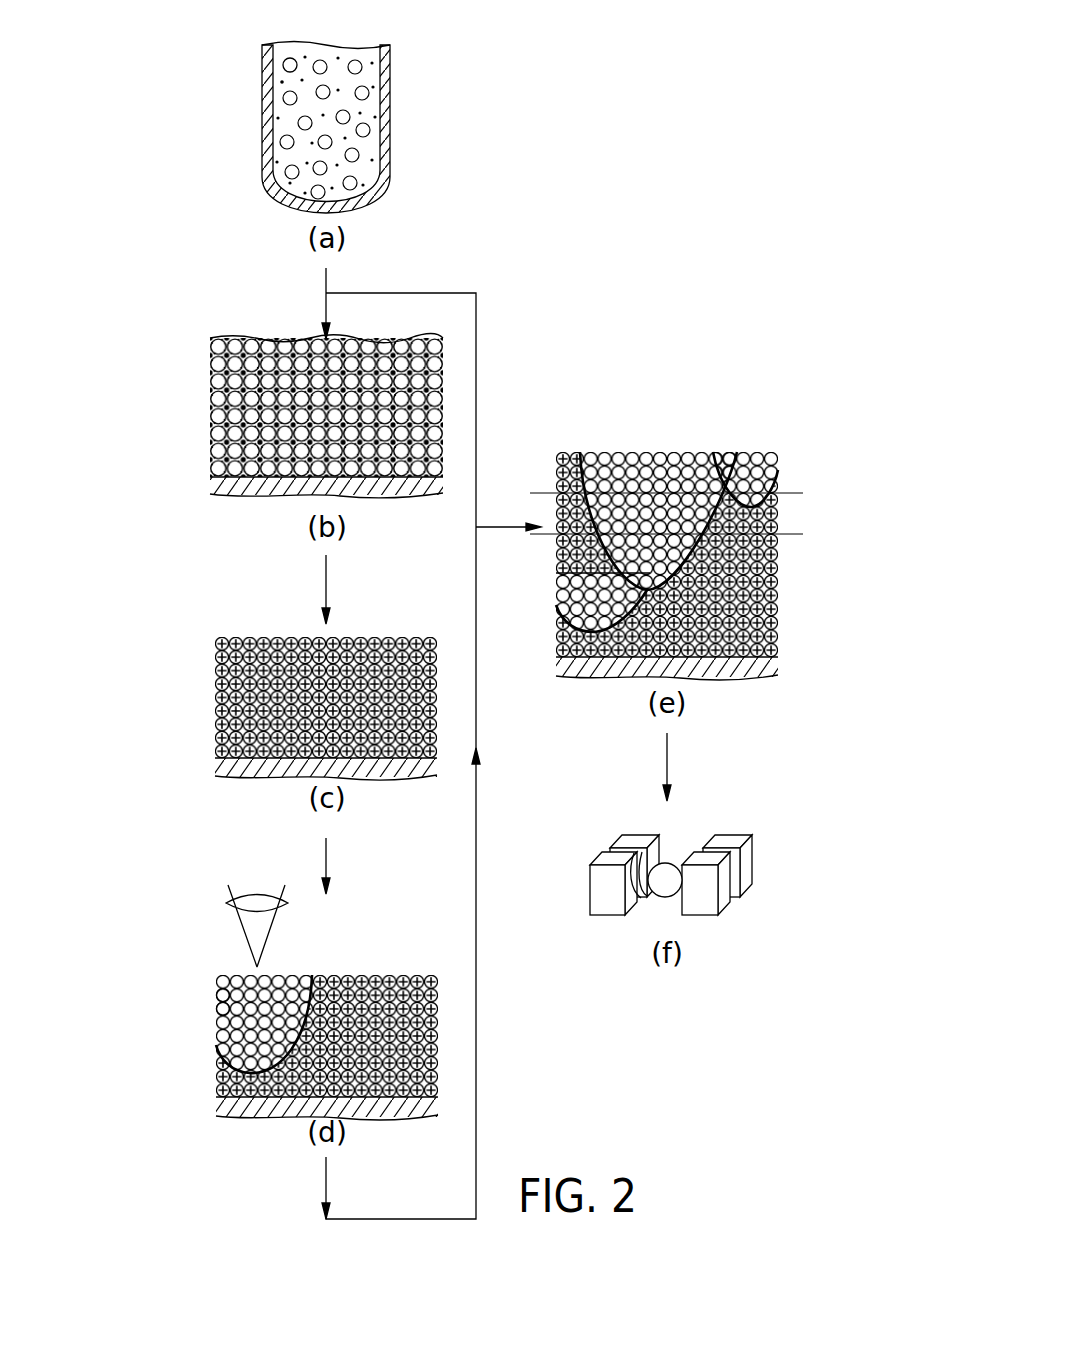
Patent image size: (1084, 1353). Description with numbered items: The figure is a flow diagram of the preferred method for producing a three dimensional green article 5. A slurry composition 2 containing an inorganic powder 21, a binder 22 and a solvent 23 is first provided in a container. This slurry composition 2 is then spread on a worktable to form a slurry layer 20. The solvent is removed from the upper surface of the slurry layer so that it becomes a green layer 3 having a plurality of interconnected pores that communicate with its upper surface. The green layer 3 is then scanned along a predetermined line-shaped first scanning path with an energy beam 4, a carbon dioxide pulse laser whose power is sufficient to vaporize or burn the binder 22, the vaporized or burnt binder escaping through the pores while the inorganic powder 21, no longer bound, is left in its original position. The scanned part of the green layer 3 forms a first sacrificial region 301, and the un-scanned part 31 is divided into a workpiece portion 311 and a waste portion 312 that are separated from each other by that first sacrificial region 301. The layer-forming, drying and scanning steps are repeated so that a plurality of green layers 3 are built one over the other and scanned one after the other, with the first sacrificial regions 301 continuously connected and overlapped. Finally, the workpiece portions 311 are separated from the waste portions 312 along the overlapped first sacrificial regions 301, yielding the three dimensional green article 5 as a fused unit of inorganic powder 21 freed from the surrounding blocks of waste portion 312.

The slurry composition 2 is at (264, 128).
The inorganic powder 21 is at (779, 598).
The binder 22 is at (779, 631).
The solvent 23 is at (285, 110).
The slurry layer 20 is at (214, 391).
The green layer 3 is at (786, 523).
The energy beam 4 is at (226, 893).
The un-scanned part 31 is at (412, 912).
The first sacrificial region 301 is at (770, 453).
The workpiece portion 311 is at (612, 378).
The waste portion 312 is at (838, 636).
The three dimensional green article 5 is at (672, 860).